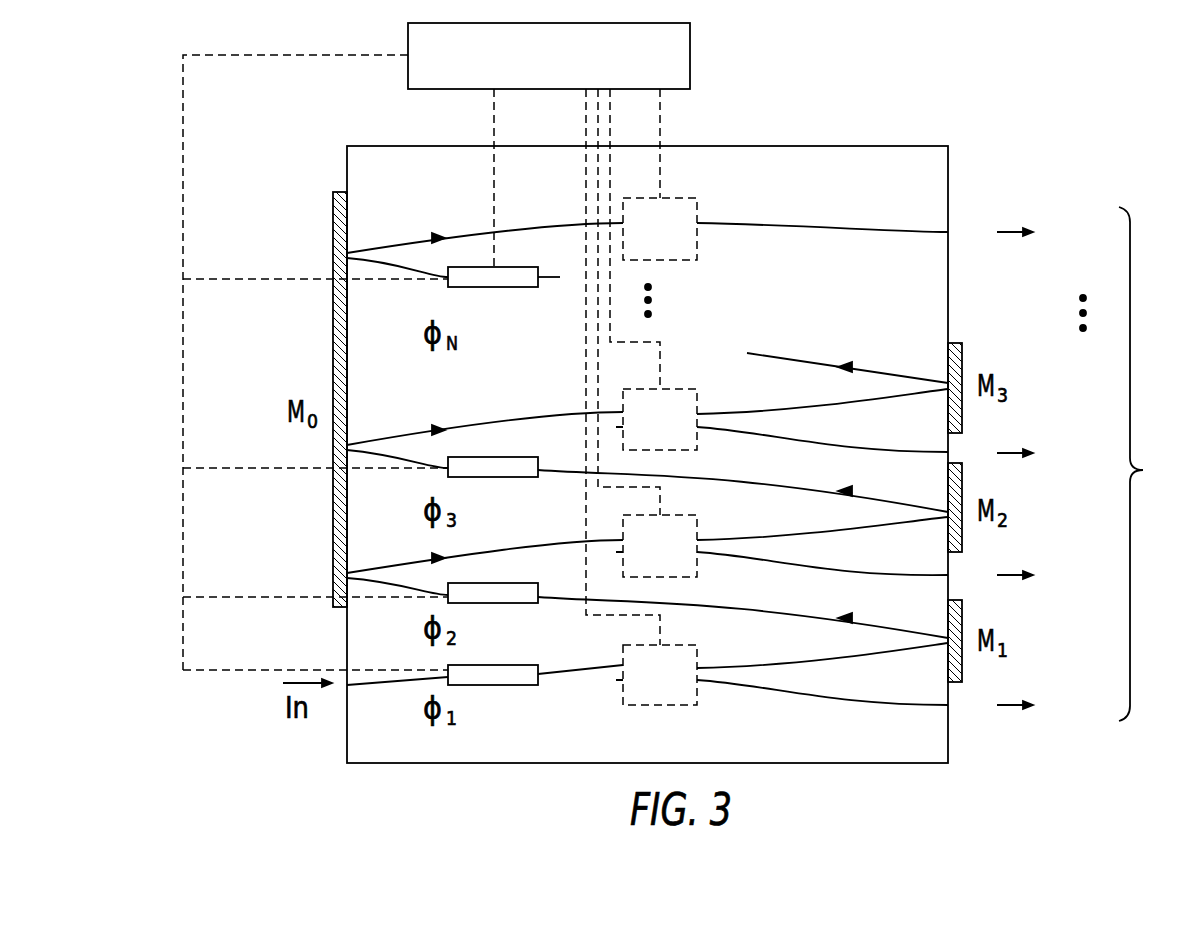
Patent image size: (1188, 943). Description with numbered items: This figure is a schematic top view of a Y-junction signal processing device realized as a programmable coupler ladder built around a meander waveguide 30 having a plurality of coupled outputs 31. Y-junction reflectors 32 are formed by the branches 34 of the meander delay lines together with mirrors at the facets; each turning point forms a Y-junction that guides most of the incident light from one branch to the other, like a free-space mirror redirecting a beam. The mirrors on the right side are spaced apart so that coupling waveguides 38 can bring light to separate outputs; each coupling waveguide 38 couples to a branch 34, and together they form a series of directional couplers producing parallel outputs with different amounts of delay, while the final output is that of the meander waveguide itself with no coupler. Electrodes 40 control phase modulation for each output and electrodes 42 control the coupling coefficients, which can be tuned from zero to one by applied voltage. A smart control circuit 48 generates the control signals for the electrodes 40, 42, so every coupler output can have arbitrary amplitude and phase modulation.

The smart control circuit 48 is at (690, 53).
The electrodes 42 is at (697, 198).
The electrodes 40 is at (490, 287).
The branches 34 is at (513, 410).
The Y-junction reflectors 32 is at (405, 448).
The coupling waveguides 38 is at (814, 447).
The meander waveguide 30 is at (575, 671).
The coupled outputs 31 is at (1082, 467).